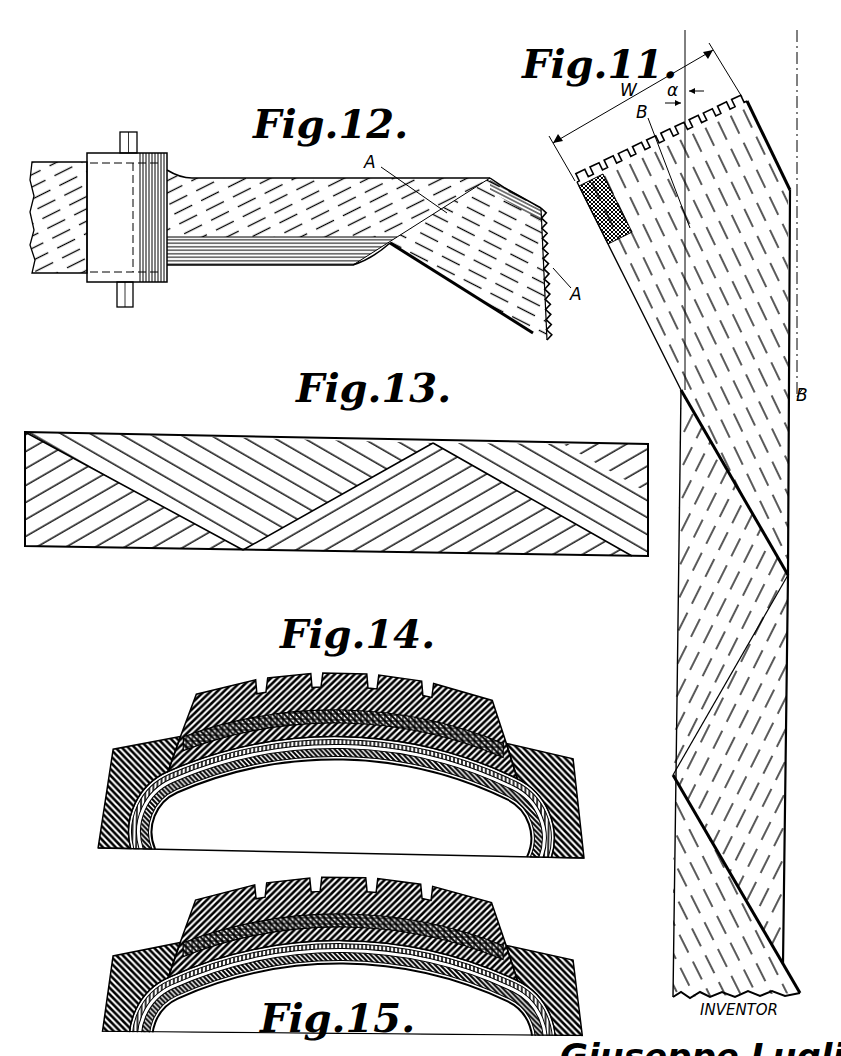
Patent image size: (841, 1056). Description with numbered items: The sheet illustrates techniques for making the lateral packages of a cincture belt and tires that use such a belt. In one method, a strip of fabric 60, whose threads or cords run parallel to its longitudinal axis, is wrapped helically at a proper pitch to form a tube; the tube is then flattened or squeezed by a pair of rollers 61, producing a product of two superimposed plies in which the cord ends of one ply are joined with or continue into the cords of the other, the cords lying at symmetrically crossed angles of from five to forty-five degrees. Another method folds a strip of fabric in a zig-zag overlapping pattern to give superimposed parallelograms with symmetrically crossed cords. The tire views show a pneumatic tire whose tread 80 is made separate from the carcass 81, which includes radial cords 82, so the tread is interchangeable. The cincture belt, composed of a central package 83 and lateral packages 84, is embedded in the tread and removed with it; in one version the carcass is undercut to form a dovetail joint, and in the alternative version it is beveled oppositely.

In FIG. 12, the strip of fabric 60 is at (441, 271).
In FIG. 12, the rollers 61 is at (158, 284).
In FIG. 14, the tread 80 is at (477, 704).
In FIG. 15, the tread 80 is at (453, 902).
In FIG. 14, the carcass 81 is at (113, 815).
In FIG. 15, the carcass 81 is at (108, 1016).
In FIG. 14, the radial cords 82 is at (167, 820).
In FIG. 15, the radial cords 82 is at (173, 1015).
In FIG. 14, the central package 83 is at (350, 722).
In FIG. 15, the central package 83 is at (345, 938).
In FIG. 14, the lateral packages 84 is at (272, 732).
In FIG. 15, the lateral packages 84 is at (232, 972).